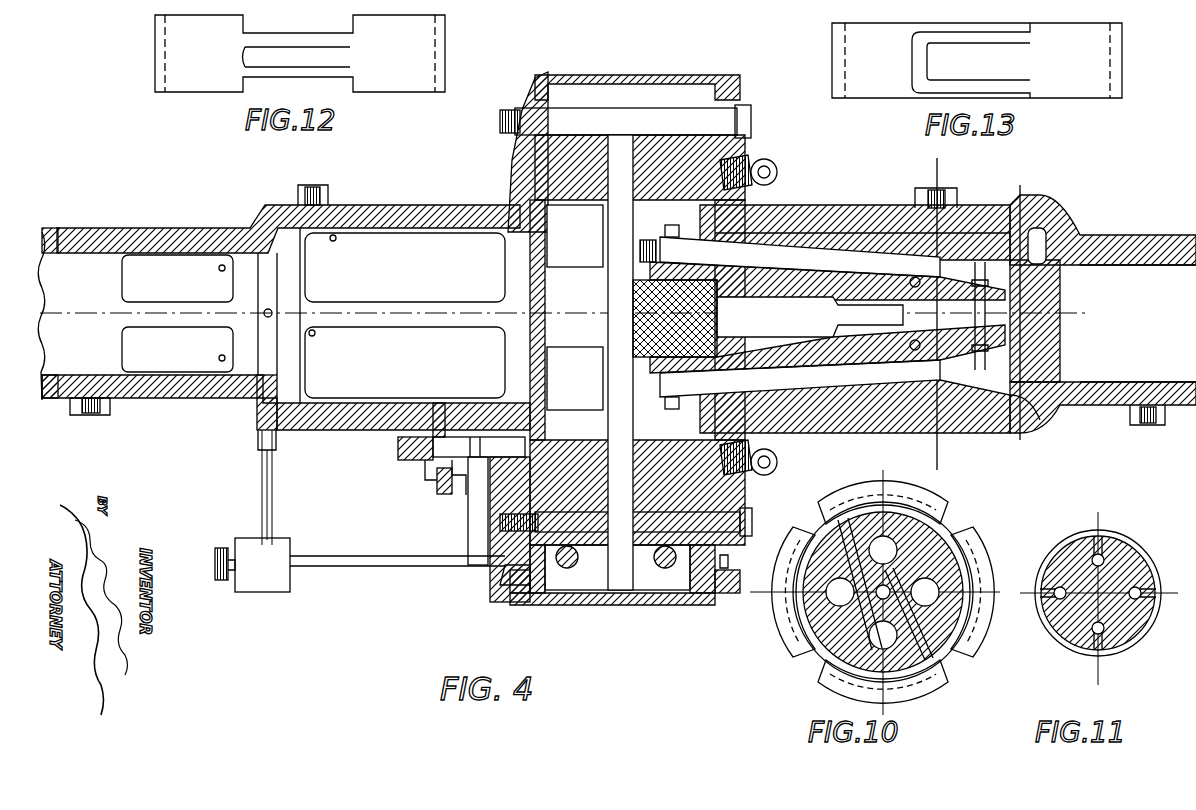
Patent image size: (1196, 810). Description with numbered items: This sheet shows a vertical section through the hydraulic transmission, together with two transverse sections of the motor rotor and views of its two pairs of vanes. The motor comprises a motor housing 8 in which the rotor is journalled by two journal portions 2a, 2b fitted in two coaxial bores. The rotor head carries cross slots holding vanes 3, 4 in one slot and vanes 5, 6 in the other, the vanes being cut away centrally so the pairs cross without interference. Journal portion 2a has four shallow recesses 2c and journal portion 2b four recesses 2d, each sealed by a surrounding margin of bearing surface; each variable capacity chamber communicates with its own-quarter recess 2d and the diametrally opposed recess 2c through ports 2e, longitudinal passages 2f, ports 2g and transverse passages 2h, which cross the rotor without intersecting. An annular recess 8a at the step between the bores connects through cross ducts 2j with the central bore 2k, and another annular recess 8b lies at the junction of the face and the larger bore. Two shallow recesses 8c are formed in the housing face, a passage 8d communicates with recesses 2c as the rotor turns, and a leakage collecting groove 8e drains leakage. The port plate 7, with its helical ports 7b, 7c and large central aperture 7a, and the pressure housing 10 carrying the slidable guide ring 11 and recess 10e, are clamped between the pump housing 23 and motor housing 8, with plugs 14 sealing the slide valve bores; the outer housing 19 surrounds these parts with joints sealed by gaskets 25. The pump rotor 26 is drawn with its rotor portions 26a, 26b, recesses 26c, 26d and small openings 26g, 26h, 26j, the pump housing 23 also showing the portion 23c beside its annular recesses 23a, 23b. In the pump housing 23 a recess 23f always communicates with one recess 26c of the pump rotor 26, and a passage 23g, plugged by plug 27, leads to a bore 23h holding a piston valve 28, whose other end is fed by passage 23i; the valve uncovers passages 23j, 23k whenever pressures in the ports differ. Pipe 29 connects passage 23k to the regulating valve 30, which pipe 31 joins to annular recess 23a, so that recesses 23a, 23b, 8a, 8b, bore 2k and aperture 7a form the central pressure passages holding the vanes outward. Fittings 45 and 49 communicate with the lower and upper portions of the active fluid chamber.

In FIG. 4, the journal portion 2a is at (965, 235).
In FIG. 4, the journal portion 2b is at (1078, 265).
In FIG. 10, the shallow recesses 2c is at (965, 562).
In FIG. 10, the recesses 2d is at (990, 572).
In FIG. 4, the ports 2e is at (675, 425).
In FIG. 4, the longitudinal passages 2f is at (800, 317).
In FIG. 10, the longitudinal passages 2f is at (882, 592).
In FIG. 11, the longitudinal passages 2f is at (1103, 560).
In FIG. 4, the ports 2g is at (1030, 245).
In FIG. 11, the ports 2g is at (1100, 558).
In FIG. 4, the transverse passages 2h is at (870, 448).
In FIG. 10, the transverse passages 2h is at (990, 668).
In FIG. 4, the cross ducts 2j is at (985, 420).
In FIG. 4, the central bore 2k is at (819, 317).
In FIG. 12, the vane 3 is at (199, 53).
In FIG. 12, the vane 4 is at (399, 53).
In FIG. 13, the vane 5 is at (875, 60).
In FIG. 13, the vane 6 is at (1076, 60).
In FIG. 4, the port plate 7 is at (625, 105).
In FIG. 4, the central aperture 7a is at (620, 313).
In FIG. 4, the port 7b is at (620, 190).
In FIG. 4, the port 7c is at (620, 440).
In FIG. 4, the motor housing 8 is at (1060, 245).
In FIG. 4, the annular recess 8a is at (1007, 246).
In FIG. 4, the annular recess 8b is at (745, 215).
In FIG. 4, the shallow recesses 8c is at (800, 450).
In FIG. 4, the passage 8d is at (930, 225).
In FIG. 4, the leakage collecting groove 8e is at (1132, 410).
In FIG. 4, the pressure housing 10 is at (928, 462).
In FIG. 4, the recess 10e is at (722, 560).
In FIG. 4, the guide ring 11 is at (1028, 429).
In FIG. 4, the plugs 14 is at (656, 252).
In FIG. 4, the outer housing 19 is at (607, 605).
In FIG. 4, the pump housing 23 is at (495, 90).
In FIG. 4, the annular recess 23a is at (268, 240).
In FIG. 4, the annular recess 23b is at (508, 215).
In FIG. 4, the pocket 23c is at (520, 452).
In FIG. 4, the recess 23f is at (445, 415).
In FIG. 4, the passage 23g is at (400, 445).
In FIG. 4, the bore 23h is at (437, 472).
In FIG. 4, the passage 23i is at (502, 449).
In FIG. 4, the passage 23j is at (485, 522).
In FIG. 4, the passage 23k is at (512, 570).
In FIG. 4, the gaskets 25 is at (703, 604).
In FIG. 4, the pump rotor 26 is at (284, 317).
In FIG. 4, the cylinder end 26a is at (292, 388).
In FIG. 4, the cylinder flange 26b is at (248, 372).
In FIG. 4, the recesses 26c is at (405, 315).
In FIG. 4, the window 26d is at (177, 313).
In FIG. 4, the hole 26g is at (220, 270).
In FIG. 4, the hole 26h is at (330, 348).
In FIG. 4, the hole 26j is at (272, 311).
In FIG. 4, the plug 27 is at (440, 492).
In FIG. 4, the piston valve 28 is at (468, 482).
In FIG. 4, the pipe 29 is at (335, 565).
In FIG. 4, the regulating valve 30 is at (262, 586).
In FIG. 4, the pipe 31 is at (265, 500).
In FIG. 4, the fitting 45 is at (778, 465).
In FIG. 4, the fitting 49 is at (778, 175).